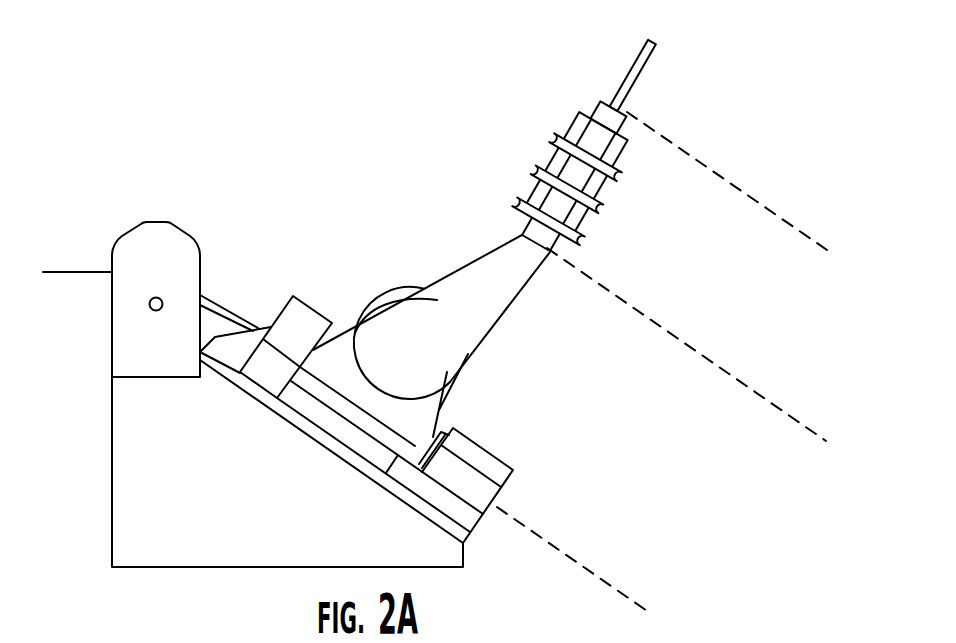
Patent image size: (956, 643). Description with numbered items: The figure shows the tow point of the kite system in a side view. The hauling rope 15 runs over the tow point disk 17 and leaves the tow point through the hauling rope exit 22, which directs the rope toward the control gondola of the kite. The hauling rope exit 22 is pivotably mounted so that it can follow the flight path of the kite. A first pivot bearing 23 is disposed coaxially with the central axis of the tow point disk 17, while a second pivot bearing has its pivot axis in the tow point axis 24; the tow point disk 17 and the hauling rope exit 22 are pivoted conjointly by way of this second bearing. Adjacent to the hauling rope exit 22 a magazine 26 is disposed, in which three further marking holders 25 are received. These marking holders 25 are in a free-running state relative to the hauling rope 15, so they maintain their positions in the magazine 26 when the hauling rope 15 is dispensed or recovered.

The hauling rope 15 is at (85, 272).
The tow point disk 17 is at (455, 398).
The hauling rope exit 22 is at (530, 270).
The first pivot bearing 23 is at (390, 353).
The tow point axis 24 is at (493, 503).
The marking holders 25 is at (545, 163).
The magazine 26 is at (666, 186).